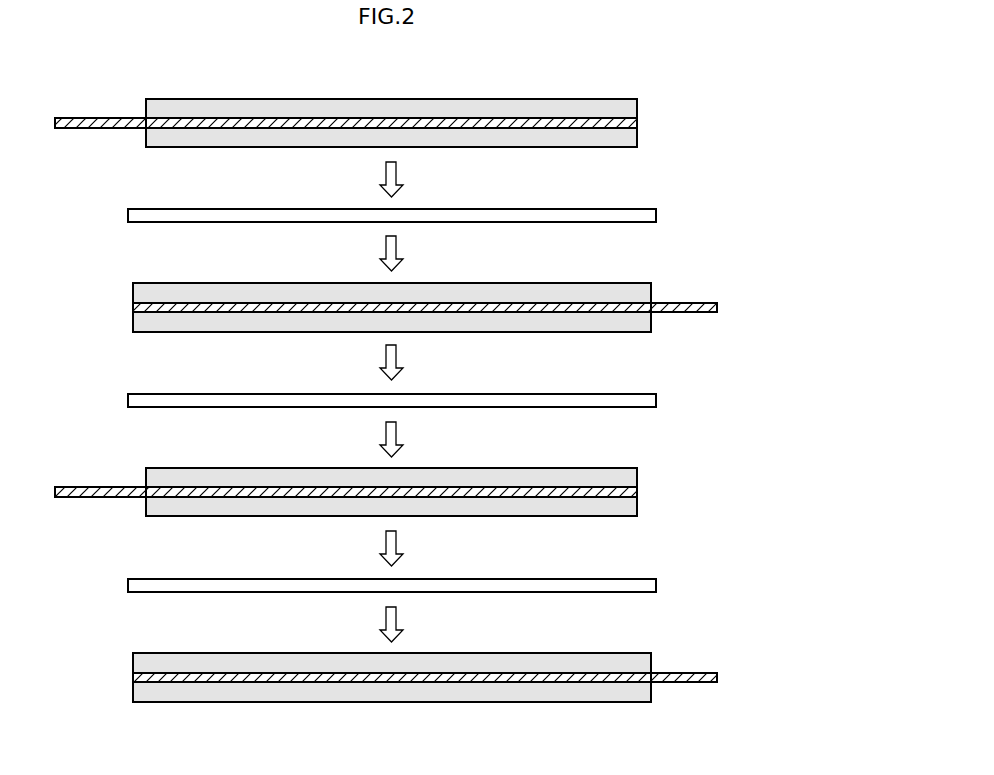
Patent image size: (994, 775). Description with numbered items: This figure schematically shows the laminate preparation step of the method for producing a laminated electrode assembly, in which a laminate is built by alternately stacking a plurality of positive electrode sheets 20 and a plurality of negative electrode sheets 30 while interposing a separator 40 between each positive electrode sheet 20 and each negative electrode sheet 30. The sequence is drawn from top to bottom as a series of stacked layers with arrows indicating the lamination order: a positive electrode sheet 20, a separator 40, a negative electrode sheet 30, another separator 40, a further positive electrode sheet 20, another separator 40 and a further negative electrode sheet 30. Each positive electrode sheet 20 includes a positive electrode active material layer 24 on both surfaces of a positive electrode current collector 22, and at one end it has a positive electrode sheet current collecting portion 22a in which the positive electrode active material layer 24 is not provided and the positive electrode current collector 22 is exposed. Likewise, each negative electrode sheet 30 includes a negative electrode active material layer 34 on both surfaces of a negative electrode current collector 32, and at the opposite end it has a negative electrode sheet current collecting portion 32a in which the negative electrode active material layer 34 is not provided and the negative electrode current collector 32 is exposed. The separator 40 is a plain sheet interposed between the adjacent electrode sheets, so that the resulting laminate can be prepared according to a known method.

The positive electrode sheet 20 is at (394, 300).
The positive electrode current collector 22 is at (637, 123).
The positive electrode sheet current collecting portion 22a is at (75, 117).
The positive electrode active material layer 24 is at (637, 100).
The negative electrode sheet 30 is at (382, 489).
The negative electrode current collector 32 is at (133, 307).
The negative electrode sheet current collecting portion 32a is at (700, 302).
The negative electrode active material layer 34 is at (133, 286).
The separator 40 is at (652, 213).